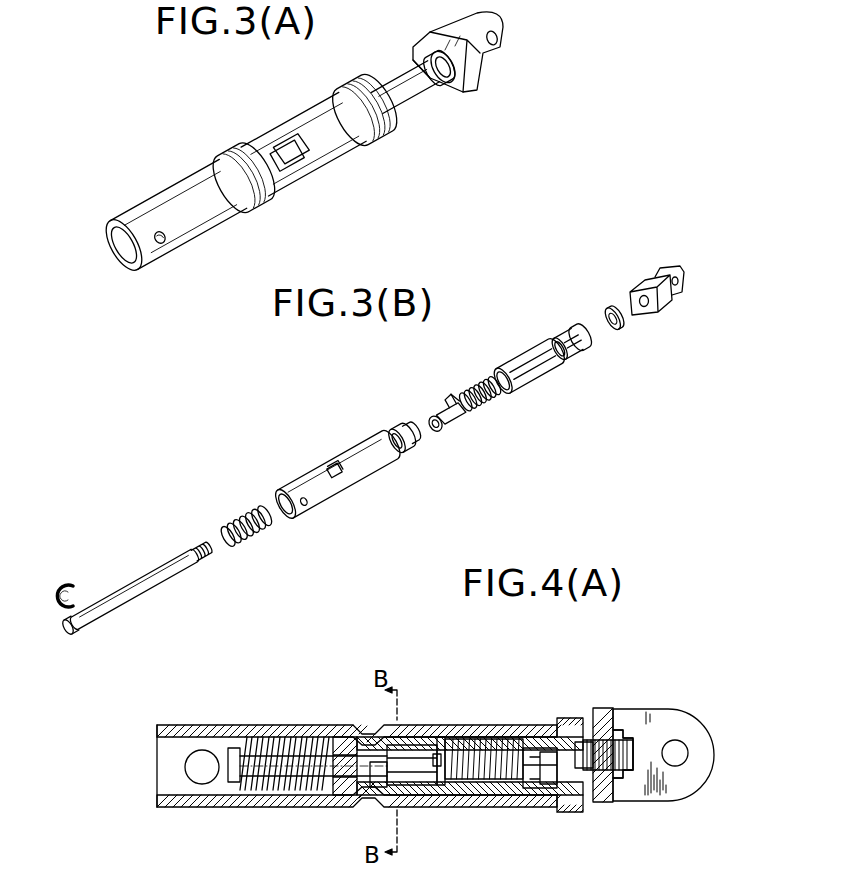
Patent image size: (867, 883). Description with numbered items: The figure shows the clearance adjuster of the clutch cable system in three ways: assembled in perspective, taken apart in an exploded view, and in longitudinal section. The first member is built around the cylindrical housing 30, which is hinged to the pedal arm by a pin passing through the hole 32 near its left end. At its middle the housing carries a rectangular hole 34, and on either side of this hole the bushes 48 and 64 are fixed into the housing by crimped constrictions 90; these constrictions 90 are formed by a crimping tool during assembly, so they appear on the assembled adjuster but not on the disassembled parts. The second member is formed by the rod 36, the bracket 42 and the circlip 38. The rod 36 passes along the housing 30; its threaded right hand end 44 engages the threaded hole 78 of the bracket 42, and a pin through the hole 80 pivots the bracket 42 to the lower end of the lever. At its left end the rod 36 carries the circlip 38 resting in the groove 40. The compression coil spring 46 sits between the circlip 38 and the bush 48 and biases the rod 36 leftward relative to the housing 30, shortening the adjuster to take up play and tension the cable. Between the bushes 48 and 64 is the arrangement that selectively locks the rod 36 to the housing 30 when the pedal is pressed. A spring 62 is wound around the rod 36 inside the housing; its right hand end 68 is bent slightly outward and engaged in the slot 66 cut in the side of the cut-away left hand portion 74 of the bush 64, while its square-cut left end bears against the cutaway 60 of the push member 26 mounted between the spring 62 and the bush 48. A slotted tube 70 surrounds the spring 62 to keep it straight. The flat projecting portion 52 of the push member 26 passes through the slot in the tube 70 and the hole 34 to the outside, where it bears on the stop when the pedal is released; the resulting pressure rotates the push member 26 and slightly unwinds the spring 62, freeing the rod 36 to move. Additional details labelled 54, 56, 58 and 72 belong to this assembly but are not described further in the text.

In FIG. 3A, the push member 26 is at (297, 168).
In FIG. 3B, the push member 26 is at (452, 421).
In FIG. 4A, the push member 26 is at (412, 765).
In FIG. 3A, the cylindrical housing 30 is at (313, 100).
In FIG. 3B, the cylindrical housing 30 is at (302, 468).
In FIG. 4A, the cylindrical housing 30 is at (483, 800).
In FIG. 3A, the hole 32 is at (163, 250).
In FIG. 3B, the hole 32 is at (305, 507).
In FIG. 4A, the hole 32 is at (200, 772).
In FIG. 3A, the rectangular hole 34 is at (290, 145).
In FIG. 3B, the rectangular hole 34 is at (340, 485).
In FIG. 3B, the rod 36 is at (138, 572).
In FIG. 4A, the rod 36 is at (340, 757).
In FIG. 3B, the circlip 38 is at (66, 583).
In FIG. 4A, the circlip 38 is at (235, 790).
In FIG. 3B, the groove 40 is at (90, 624).
In FIG. 3A, the bracket 42 is at (413, 47).
In FIG. 3B, the bracket 42 is at (682, 296).
In FIG. 4A, the bracket 42 is at (658, 748).
In FIG. 3B, the right hand end of rod 44 is at (208, 556).
In FIG. 4A, the right hand end of rod 44 is at (638, 752).
In FIG. 3B, the compression coil spring 46 is at (242, 514).
In FIG. 4A, the compression coil spring 46 is at (272, 735).
In FIG. 3B, the bush 48 is at (392, 432).
In FIG. 4A, the bush 48 is at (338, 737).
In FIG. 3B, the projecting portion 52 is at (462, 425).
In FIG. 3B, the pawl member 54 is at (452, 412).
In FIG. 3B, the pawl hook ring 56 is at (430, 425).
In FIG. 4A, the pawl hook ring 56 is at (382, 778).
In FIG. 3B, the pawl tab 58 is at (446, 406).
In FIG. 4A, the pawl tab 58 is at (448, 737).
In FIG. 3B, the cutaway 60 is at (452, 405).
In FIG. 4A, the cutaway 60 is at (438, 766).
In FIG. 3B, the spring 62 is at (487, 410).
In FIG. 4A, the spring 62 is at (482, 745).
In FIG. 3B, the bush 64 is at (575, 338).
In FIG. 4A, the bush 64 is at (530, 764).
In FIG. 3B, the slot 66 is at (580, 345).
In FIG. 4A, the slot 66 is at (528, 772).
In FIG. 3B, the right hand end of spring 68 is at (502, 388).
In FIG. 3A, the slotted tube 70 is at (268, 146).
In FIG. 3B, the slotted tube 70 is at (529, 368).
In FIG. 4A, the slotted tube 70 is at (416, 738).
In FIG. 3B, the flange 72 is at (594, 340).
In FIG. 4A, the flange 72 is at (562, 792).
In FIG. 4A, the left hand portion of bush 74 is at (527, 800).
In FIG. 3B, the threaded hole 78 is at (650, 308).
In FIG. 4A, the threaded hole 78 is at (618, 745).
In FIG. 3A, the hole 80 is at (495, 47).
In FIG. 3B, the hole 80 is at (685, 288).
In FIG. 4A, the hole 80 is at (680, 748).
In FIG. 3A, the crimped constrictions 90 is at (251, 203).
In FIG. 4A, the crimped constrictions 90 is at (360, 722).